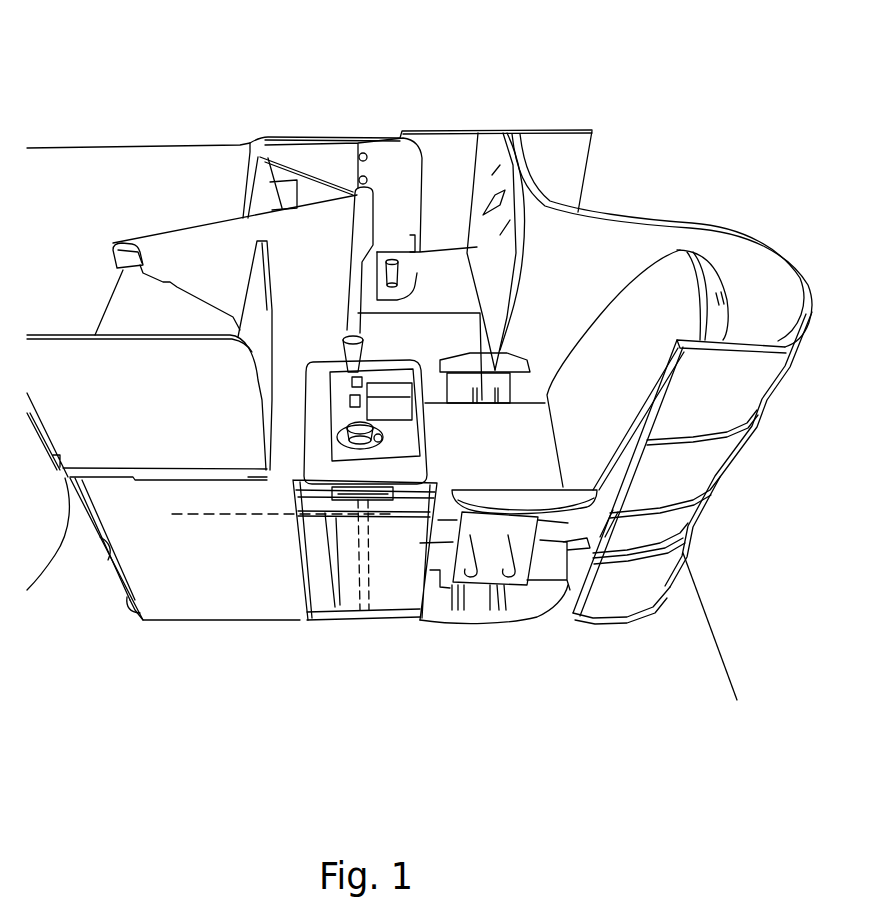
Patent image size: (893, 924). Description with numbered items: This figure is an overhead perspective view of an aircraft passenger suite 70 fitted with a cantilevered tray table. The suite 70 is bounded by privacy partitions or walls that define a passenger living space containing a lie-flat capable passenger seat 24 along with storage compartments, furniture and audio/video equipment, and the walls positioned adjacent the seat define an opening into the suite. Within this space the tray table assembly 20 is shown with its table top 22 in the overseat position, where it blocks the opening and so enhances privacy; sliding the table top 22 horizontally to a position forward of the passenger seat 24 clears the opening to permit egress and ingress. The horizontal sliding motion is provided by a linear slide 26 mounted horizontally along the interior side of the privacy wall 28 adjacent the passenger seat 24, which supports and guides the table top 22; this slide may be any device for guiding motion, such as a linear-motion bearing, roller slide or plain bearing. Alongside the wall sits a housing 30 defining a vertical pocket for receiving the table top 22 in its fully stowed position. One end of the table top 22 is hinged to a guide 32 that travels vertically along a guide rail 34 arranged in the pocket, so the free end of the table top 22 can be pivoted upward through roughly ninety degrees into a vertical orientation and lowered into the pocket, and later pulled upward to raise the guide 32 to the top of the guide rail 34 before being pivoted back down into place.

The aircraft passenger suite 70 is at (268, 95).
The tray table assembly 20 is at (322, 675).
The table top 22 is at (318, 467).
The passenger seat 24 is at (543, 540).
The linear slide 26 is at (335, 612).
The privacy wall 28 is at (177, 567).
The housing 30 is at (398, 603).
The guide 32 is at (403, 500).
The guide rail 34 is at (360, 613).